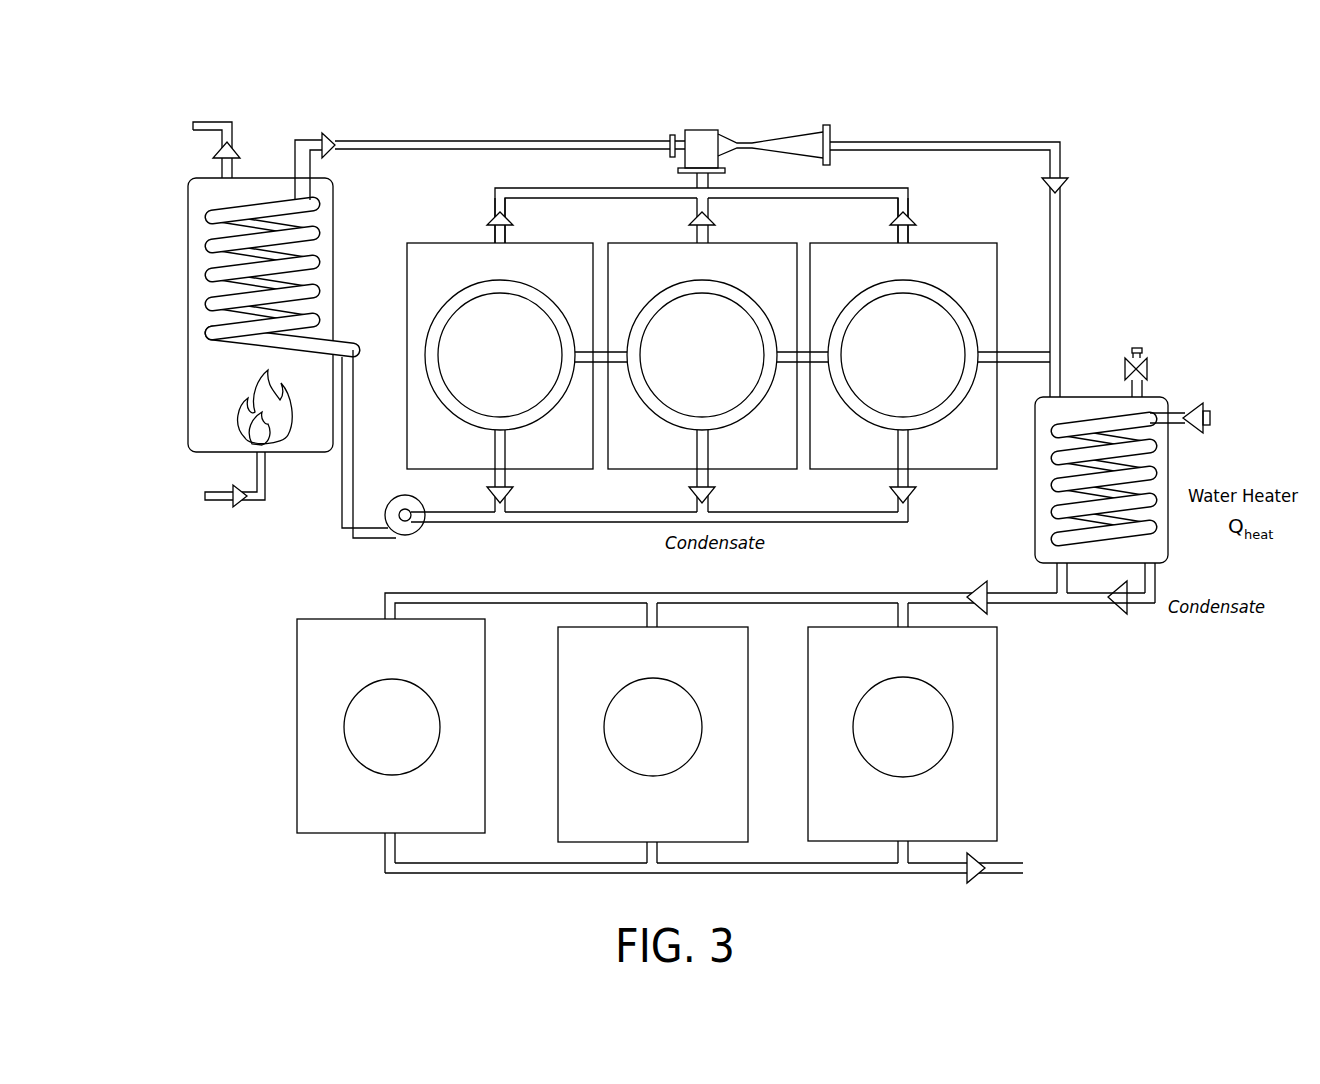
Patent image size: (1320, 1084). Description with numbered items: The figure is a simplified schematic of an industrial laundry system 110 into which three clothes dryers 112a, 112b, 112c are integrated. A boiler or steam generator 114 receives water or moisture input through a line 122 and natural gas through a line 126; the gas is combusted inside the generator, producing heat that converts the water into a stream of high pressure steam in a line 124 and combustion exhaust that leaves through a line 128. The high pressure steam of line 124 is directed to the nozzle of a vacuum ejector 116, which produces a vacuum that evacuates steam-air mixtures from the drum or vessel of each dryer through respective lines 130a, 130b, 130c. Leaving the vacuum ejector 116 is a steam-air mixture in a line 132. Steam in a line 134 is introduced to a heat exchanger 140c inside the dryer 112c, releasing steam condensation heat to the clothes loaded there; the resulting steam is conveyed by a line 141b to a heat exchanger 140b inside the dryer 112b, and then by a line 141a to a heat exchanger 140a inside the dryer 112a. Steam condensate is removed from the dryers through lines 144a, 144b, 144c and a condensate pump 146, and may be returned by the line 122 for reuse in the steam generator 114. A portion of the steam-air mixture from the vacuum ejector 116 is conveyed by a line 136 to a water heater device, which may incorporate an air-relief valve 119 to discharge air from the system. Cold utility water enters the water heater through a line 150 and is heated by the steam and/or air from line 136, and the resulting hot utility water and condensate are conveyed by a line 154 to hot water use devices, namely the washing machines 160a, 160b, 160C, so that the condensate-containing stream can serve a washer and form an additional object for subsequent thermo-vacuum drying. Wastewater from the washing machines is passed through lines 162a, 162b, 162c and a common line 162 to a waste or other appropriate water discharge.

The industrial laundry system 110 is at (1195, 110).
The dryer 112a is at (422, 243).
The dryer 112b is at (646, 243).
The dryer 112c is at (982, 243).
The steam generator 114 is at (190, 217).
The vacuum ejector 116 is at (672, 138).
The air-relief valve 119 is at (1148, 352).
The line 122 is at (340, 515).
The line 124 is at (345, 140).
The line 126 is at (210, 502).
The line 128 is at (212, 122).
The line 130a is at (537, 188).
The line 130b is at (716, 216).
The line 130c is at (955, 210).
The line 132 is at (1060, 228).
The line 134 is at (1020, 348).
The line 136 is at (1058, 380).
The heat exchanger 140a is at (435, 317).
The heat exchanger 140b is at (636, 322).
The heat exchanger 140c is at (838, 322).
The line 141a is at (588, 323).
The line 141b is at (790, 323).
The line 144a is at (507, 475).
The line 144b is at (709, 475).
The line 144c is at (910, 480).
The condensate pump 146 is at (418, 536).
The line 150 is at (1207, 412).
The line 154 is at (838, 592).
The washing machine 160a is at (325, 692).
The washing machine 160b is at (590, 725).
The washing machine 160C is at (977, 715).
The line 162 is at (938, 877).
The line 162a is at (380, 850).
The line 162b is at (647, 853).
The line 162c is at (897, 852).